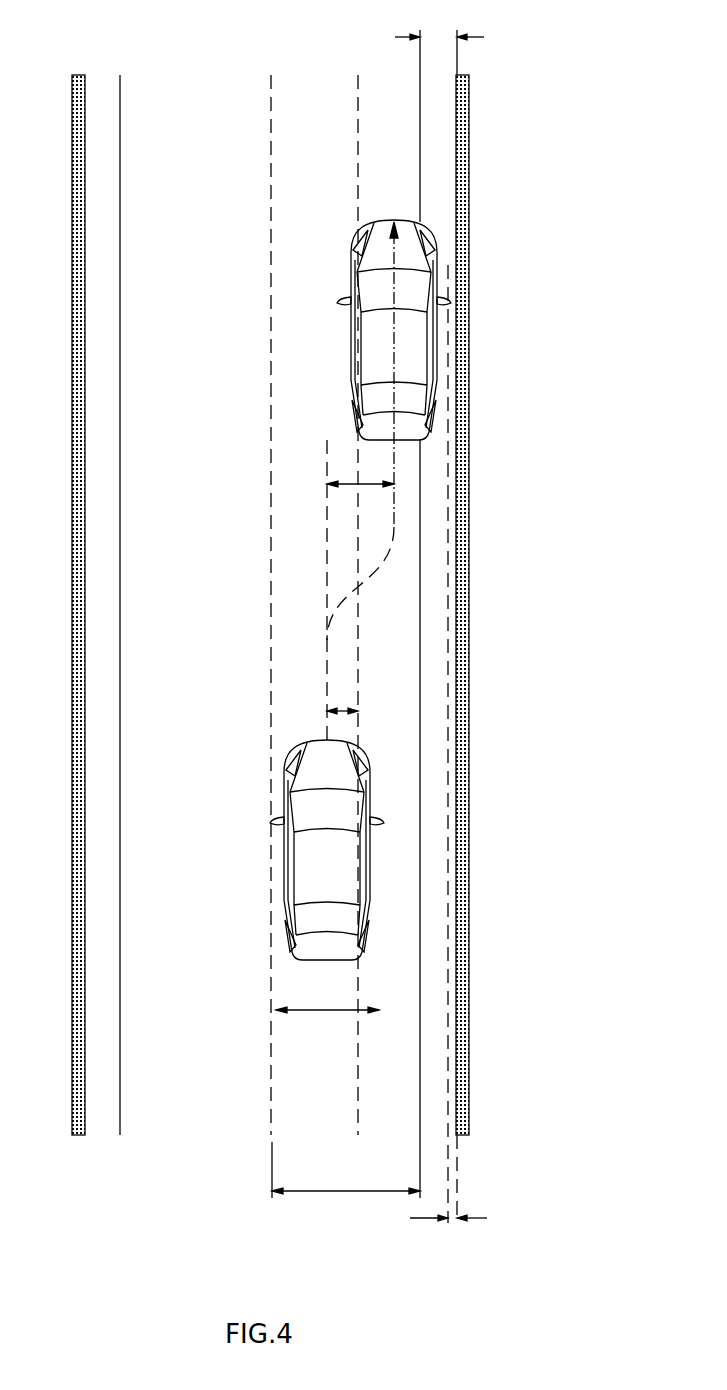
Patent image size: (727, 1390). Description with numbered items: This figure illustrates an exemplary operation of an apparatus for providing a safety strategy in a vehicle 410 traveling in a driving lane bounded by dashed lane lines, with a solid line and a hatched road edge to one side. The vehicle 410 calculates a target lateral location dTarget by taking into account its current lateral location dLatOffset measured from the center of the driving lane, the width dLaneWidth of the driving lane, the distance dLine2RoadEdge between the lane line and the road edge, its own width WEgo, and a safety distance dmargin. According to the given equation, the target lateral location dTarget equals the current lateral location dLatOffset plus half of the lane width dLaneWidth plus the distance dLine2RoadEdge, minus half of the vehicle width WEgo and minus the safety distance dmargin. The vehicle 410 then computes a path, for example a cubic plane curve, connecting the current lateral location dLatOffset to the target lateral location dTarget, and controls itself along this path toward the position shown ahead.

The vehicle 410 is at (370, 873).
The distance between a line and a road edge dLine2RoadEdge is at (445, 20).
The target lateral location dTarget is at (360, 498).
The current lateral location dLatOffset is at (378, 699).
The width of the vehicle WEgo is at (327, 998).
The width of the driving lane dLaneWidth is at (346, 1170).
The safety distance dmargin is at (450, 1234).